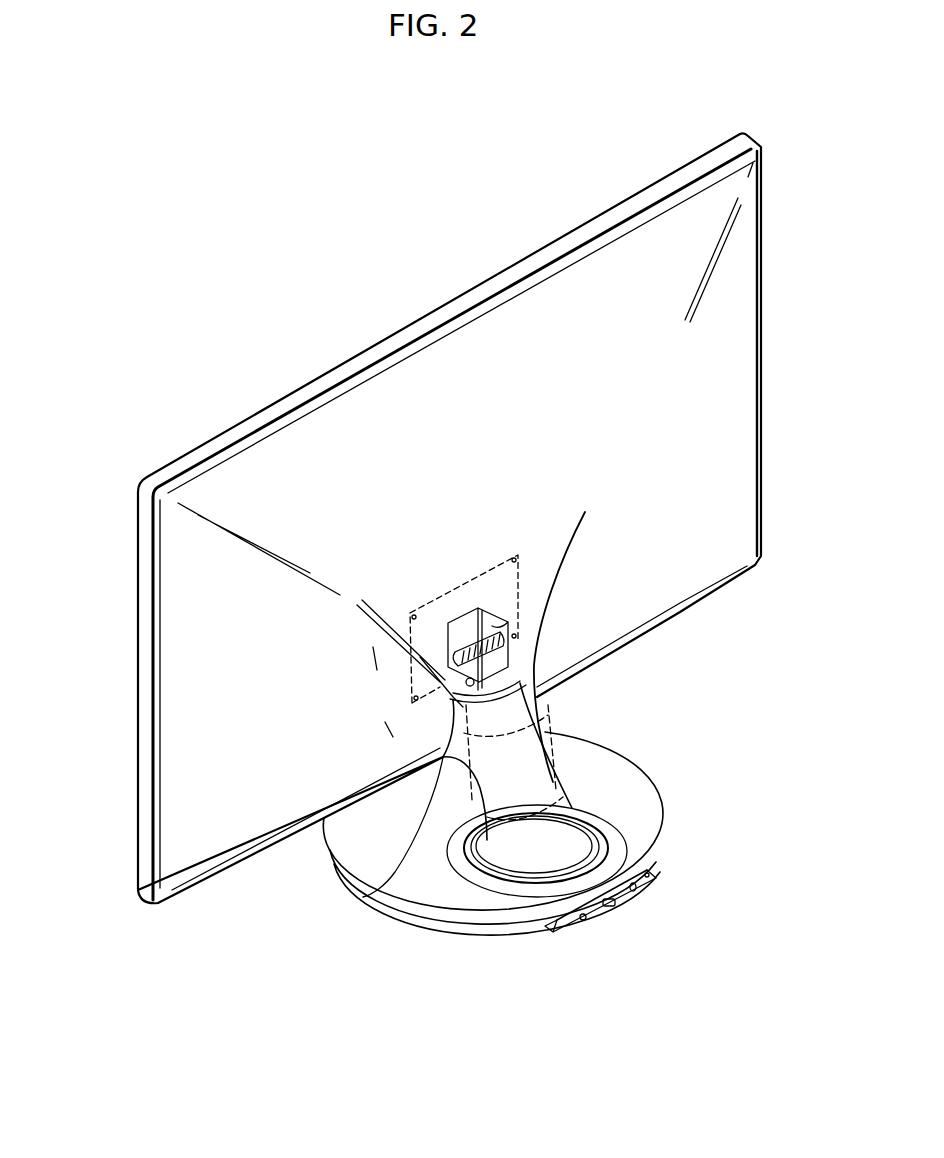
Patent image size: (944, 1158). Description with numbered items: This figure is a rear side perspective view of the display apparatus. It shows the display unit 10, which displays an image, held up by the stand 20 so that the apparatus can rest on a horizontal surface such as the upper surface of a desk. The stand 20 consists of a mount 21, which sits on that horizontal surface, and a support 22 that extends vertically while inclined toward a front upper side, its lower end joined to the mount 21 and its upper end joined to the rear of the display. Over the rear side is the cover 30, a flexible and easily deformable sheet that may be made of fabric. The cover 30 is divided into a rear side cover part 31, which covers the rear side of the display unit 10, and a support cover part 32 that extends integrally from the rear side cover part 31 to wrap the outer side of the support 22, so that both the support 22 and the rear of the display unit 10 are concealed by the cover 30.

The display unit 10 is at (128, 582).
The stand 20 is at (516, 831).
The mount 21 is at (625, 782).
The support 22 is at (382, 894).
The cover 30 is at (742, 488).
The rear side cover part 31 is at (710, 407).
The support cover part 32 is at (535, 655).